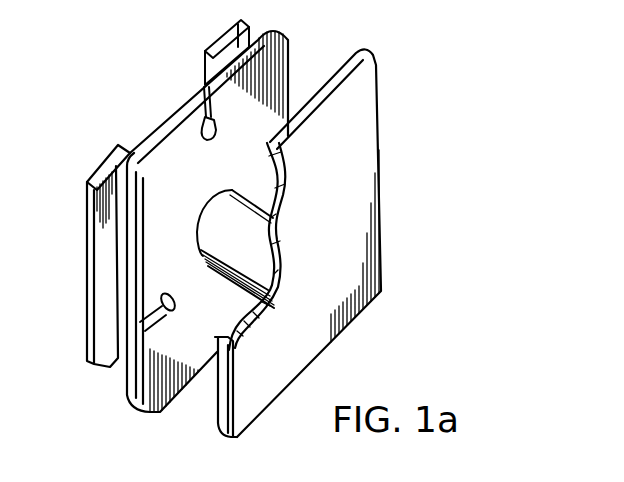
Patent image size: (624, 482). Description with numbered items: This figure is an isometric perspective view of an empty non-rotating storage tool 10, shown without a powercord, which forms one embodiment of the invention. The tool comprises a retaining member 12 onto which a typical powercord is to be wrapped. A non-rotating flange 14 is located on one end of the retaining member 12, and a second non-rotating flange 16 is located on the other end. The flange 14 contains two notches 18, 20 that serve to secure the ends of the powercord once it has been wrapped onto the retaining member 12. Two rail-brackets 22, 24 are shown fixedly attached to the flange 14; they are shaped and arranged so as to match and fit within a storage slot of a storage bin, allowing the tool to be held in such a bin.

The non-rotating storage tool 10 is at (402, 174).
The retaining member 12 is at (194, 245).
The non-rotating flange 14 is at (166, 124).
The non-rotating flange 16 is at (216, 414).
The notch 18 is at (213, 138).
The notch 20 is at (162, 293).
The rail-bracket 22 is at (97, 170).
The rail-bracket 24 is at (205, 50).